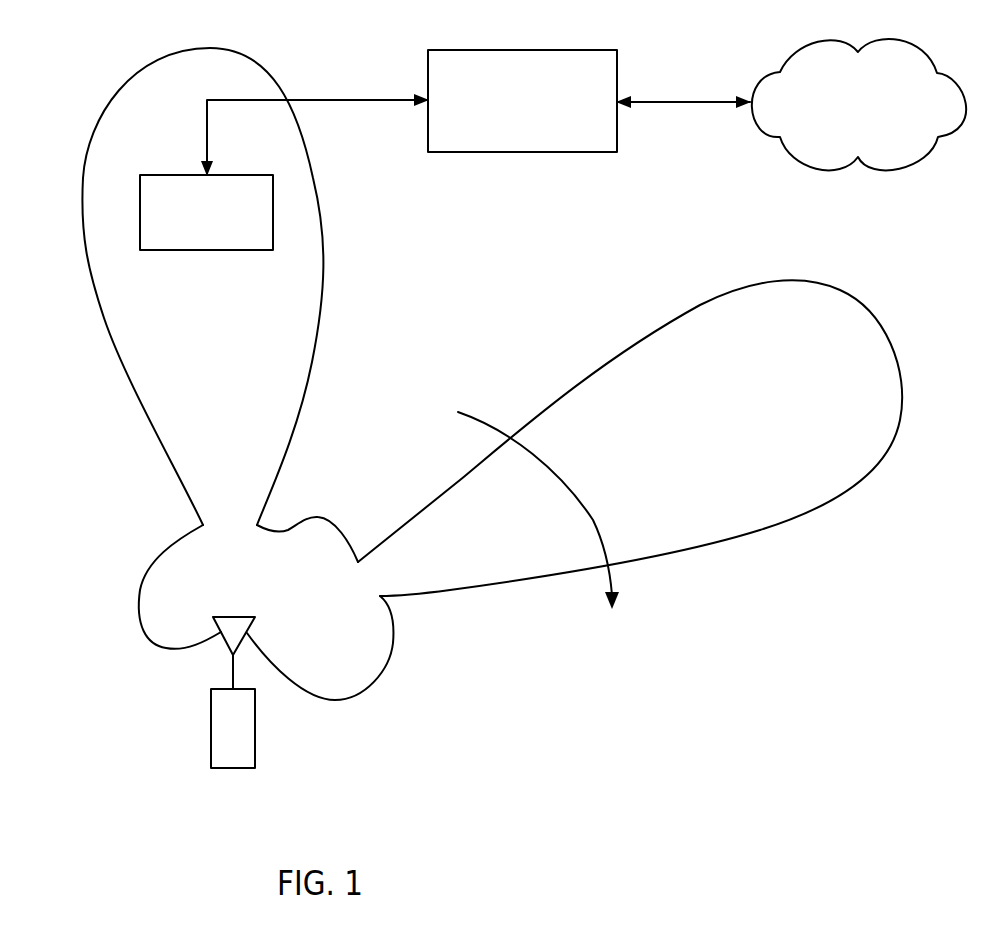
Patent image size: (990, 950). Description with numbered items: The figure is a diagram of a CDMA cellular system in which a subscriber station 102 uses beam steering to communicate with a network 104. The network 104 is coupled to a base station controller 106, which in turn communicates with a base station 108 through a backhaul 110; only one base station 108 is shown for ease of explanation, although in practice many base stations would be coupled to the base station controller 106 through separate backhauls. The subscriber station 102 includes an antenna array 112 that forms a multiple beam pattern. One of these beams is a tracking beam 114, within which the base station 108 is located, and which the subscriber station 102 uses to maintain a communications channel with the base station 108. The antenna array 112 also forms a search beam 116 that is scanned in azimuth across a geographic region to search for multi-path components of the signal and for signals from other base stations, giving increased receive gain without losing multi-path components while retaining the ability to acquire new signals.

The subscriber station 102 is at (228, 768).
The network 104 is at (933, 62).
The base station controller 106 is at (538, 50).
The base station 108 is at (185, 173).
The backhaul 110 is at (322, 100).
The antenna array 112 is at (223, 643).
The tracking beam 114 is at (312, 163).
The search beam 116 is at (702, 543).